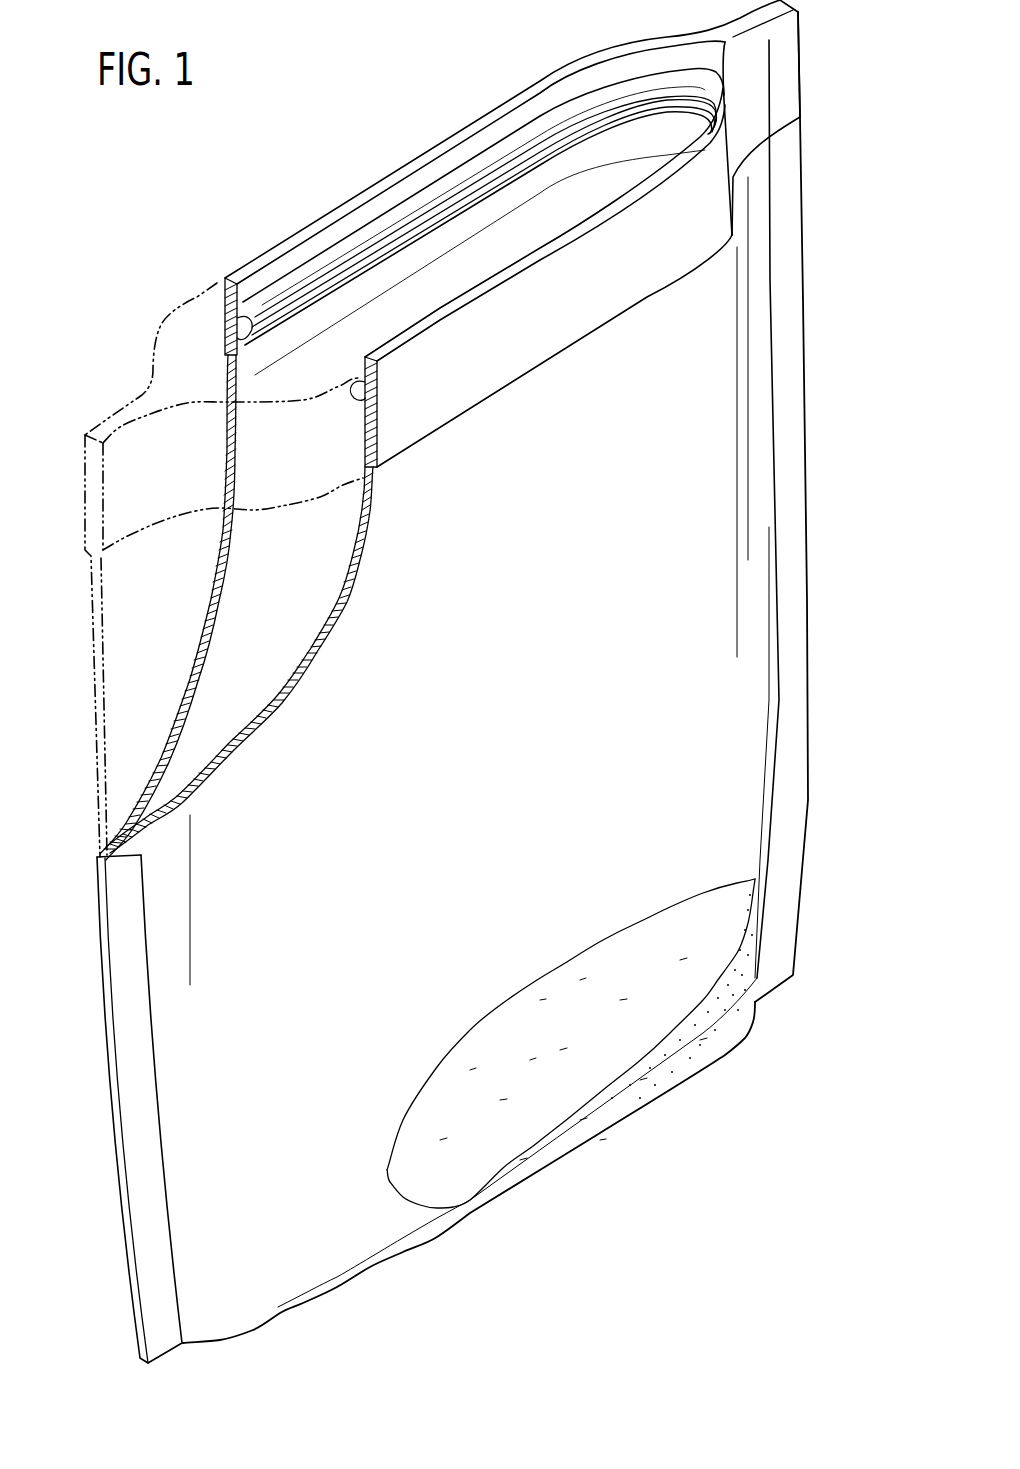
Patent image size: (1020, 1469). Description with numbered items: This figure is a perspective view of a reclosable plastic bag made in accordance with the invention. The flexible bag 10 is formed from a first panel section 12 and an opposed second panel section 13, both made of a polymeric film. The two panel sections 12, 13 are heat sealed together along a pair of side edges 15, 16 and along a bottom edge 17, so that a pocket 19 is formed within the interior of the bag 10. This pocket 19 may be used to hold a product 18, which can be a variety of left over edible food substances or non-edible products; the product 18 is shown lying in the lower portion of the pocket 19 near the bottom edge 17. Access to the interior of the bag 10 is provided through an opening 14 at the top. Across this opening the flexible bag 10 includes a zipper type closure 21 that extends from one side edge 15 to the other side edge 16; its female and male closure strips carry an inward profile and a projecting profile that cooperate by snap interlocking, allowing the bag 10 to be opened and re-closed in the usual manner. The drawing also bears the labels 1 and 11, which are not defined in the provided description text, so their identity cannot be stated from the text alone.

The front panel 1 is at (573, 317).
The flexible bag 10 is at (365, 117).
The back panel 11 is at (767, 318).
The first panel section 12 is at (208, 697).
The second panel section 13 is at (325, 657).
The opening 14 is at (328, 203).
The side edge 15 is at (115, 1112).
The side edge 16 is at (803, 396).
The bottom edge 17 is at (398, 1250).
The product 18 is at (680, 1057).
The pocket 19 is at (503, 247).
The zipper type closure 21 is at (516, 133).